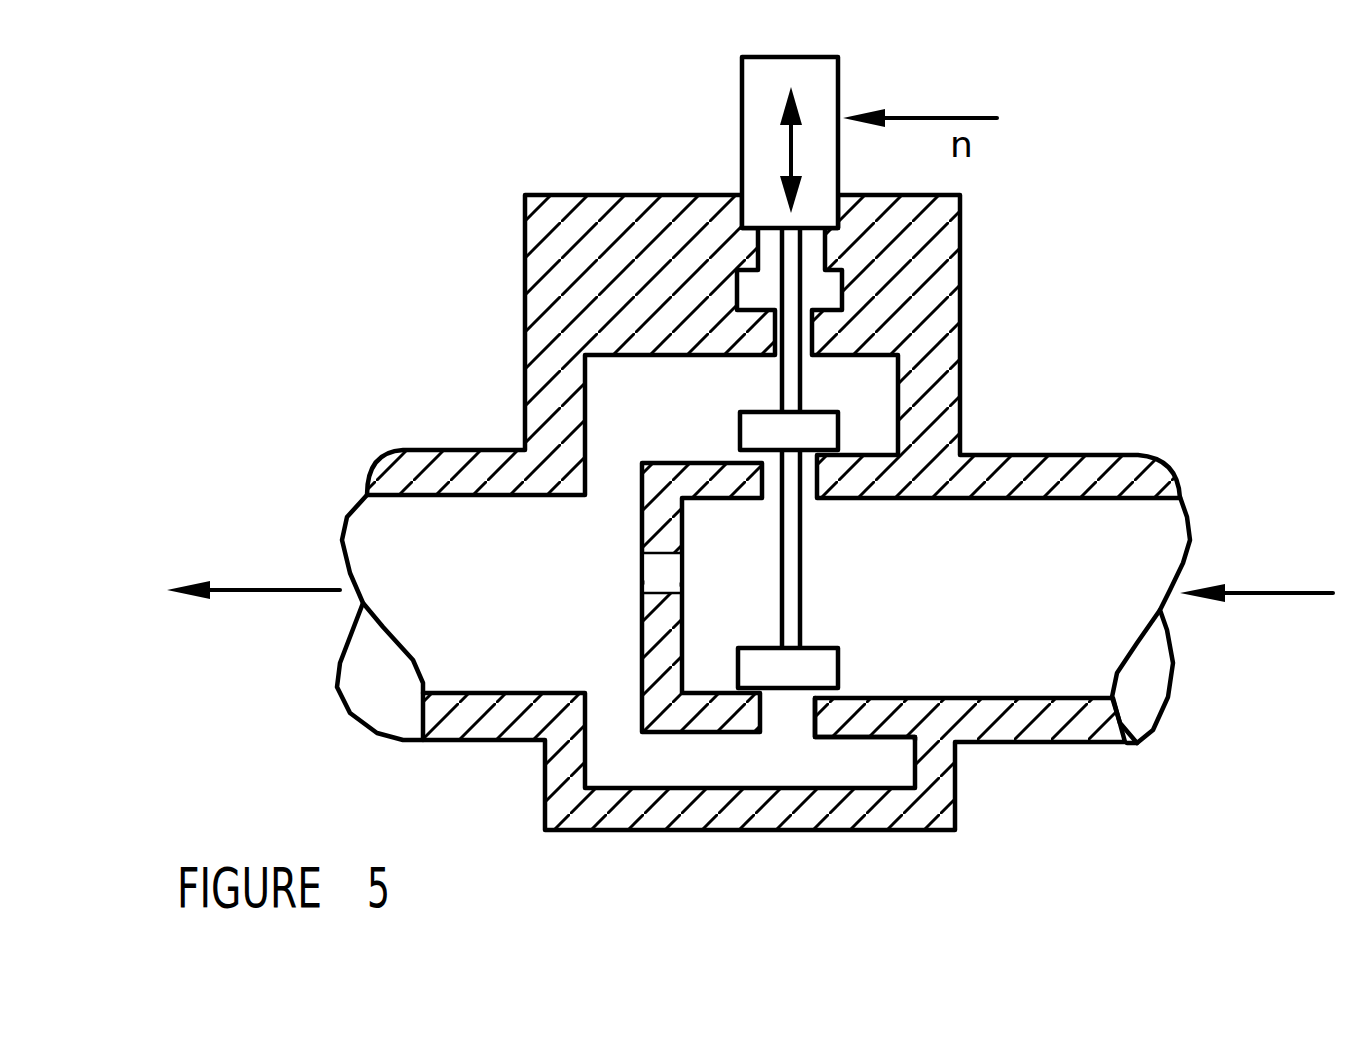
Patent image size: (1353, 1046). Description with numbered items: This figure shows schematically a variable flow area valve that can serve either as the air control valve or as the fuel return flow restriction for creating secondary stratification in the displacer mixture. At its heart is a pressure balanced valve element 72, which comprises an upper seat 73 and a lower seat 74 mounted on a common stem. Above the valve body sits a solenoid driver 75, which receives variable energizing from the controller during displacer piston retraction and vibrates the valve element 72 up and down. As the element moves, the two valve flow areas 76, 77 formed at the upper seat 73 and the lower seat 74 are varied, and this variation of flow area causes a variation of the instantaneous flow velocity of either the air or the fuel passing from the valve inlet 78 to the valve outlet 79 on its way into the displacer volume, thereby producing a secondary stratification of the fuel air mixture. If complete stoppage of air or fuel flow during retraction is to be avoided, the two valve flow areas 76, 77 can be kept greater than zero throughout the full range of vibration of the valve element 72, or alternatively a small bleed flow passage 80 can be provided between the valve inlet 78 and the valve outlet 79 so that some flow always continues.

The pressure balanced valve element 72 is at (973, 700).
The upper seat 73 is at (832, 450).
The lower seat 74 is at (842, 698).
The solenoid driver 75 is at (767, 120).
The valve flow area 76 is at (733, 458).
The valve flow area 77 is at (760, 690).
The valve inlet 78 is at (1230, 587).
The valve outlet 79 is at (297, 588).
The bleed flow passage 80 is at (660, 572).